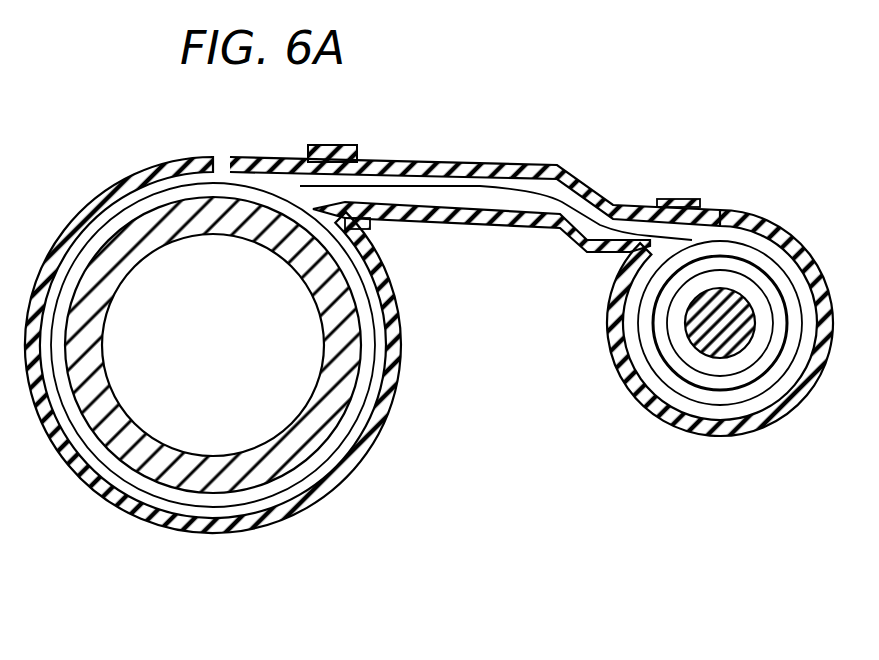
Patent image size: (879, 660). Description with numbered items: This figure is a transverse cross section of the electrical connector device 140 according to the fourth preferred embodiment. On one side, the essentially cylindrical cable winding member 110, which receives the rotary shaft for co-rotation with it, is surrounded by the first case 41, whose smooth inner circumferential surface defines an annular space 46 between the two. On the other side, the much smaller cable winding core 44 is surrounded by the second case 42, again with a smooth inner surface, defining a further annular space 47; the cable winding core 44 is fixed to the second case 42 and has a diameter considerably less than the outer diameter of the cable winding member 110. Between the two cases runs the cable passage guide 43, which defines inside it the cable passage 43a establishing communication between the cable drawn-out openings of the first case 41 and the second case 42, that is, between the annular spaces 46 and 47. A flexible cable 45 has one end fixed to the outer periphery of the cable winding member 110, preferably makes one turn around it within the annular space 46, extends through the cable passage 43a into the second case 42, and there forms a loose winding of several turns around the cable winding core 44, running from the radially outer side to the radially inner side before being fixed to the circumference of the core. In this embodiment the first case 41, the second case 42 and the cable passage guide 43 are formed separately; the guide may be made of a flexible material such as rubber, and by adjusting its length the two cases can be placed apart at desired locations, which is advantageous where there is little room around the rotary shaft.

The first case 41 is at (80, 478).
The second case 42 is at (736, 432).
The cable passage guide 43 is at (588, 188).
The cable passage 43a is at (488, 182).
The cable winding core 44 is at (687, 328).
The flexible cable 45 is at (477, 212).
The annular space 46 is at (343, 433).
The annular space 47 is at (746, 262).
The cable winding member 110 is at (202, 486).
The connector device 140 is at (491, 455).